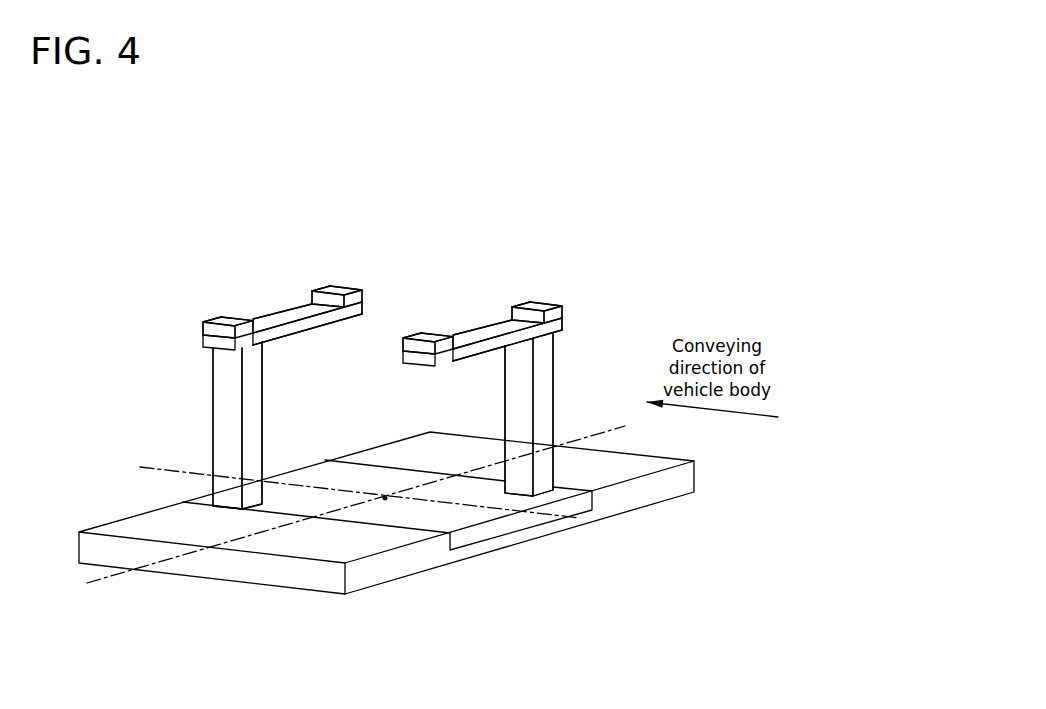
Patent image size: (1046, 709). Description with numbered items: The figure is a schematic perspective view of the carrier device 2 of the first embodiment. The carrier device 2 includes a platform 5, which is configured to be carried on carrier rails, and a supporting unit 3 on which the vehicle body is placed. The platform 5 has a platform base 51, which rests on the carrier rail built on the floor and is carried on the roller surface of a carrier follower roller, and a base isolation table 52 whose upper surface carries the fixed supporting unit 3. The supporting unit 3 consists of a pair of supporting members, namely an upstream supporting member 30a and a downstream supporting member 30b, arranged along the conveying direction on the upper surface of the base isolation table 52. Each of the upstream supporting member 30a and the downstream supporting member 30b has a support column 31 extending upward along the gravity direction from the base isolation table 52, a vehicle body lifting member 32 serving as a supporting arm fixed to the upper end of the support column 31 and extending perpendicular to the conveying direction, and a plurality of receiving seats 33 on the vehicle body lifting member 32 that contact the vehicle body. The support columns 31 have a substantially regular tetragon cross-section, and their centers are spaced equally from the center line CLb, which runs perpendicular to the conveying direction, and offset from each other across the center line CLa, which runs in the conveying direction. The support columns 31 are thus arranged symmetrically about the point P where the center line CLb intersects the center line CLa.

The carrier device 2 is at (401, 262).
The supporting unit 3 is at (588, 350).
The upstream supporting member 30a is at (580, 302).
The downstream supporting member 30b is at (185, 348).
The support column 31 is at (213, 405).
The vehicle body lifting member 32 is at (277, 316).
The receiving seat 33 is at (236, 320).
The platform 5 is at (727, 500).
The platform base 51 is at (703, 466).
The base isolation table 52 is at (444, 518).
The point of intersection P is at (385, 497).
The center line CLa is at (339, 487).
The center line CLb is at (331, 513).